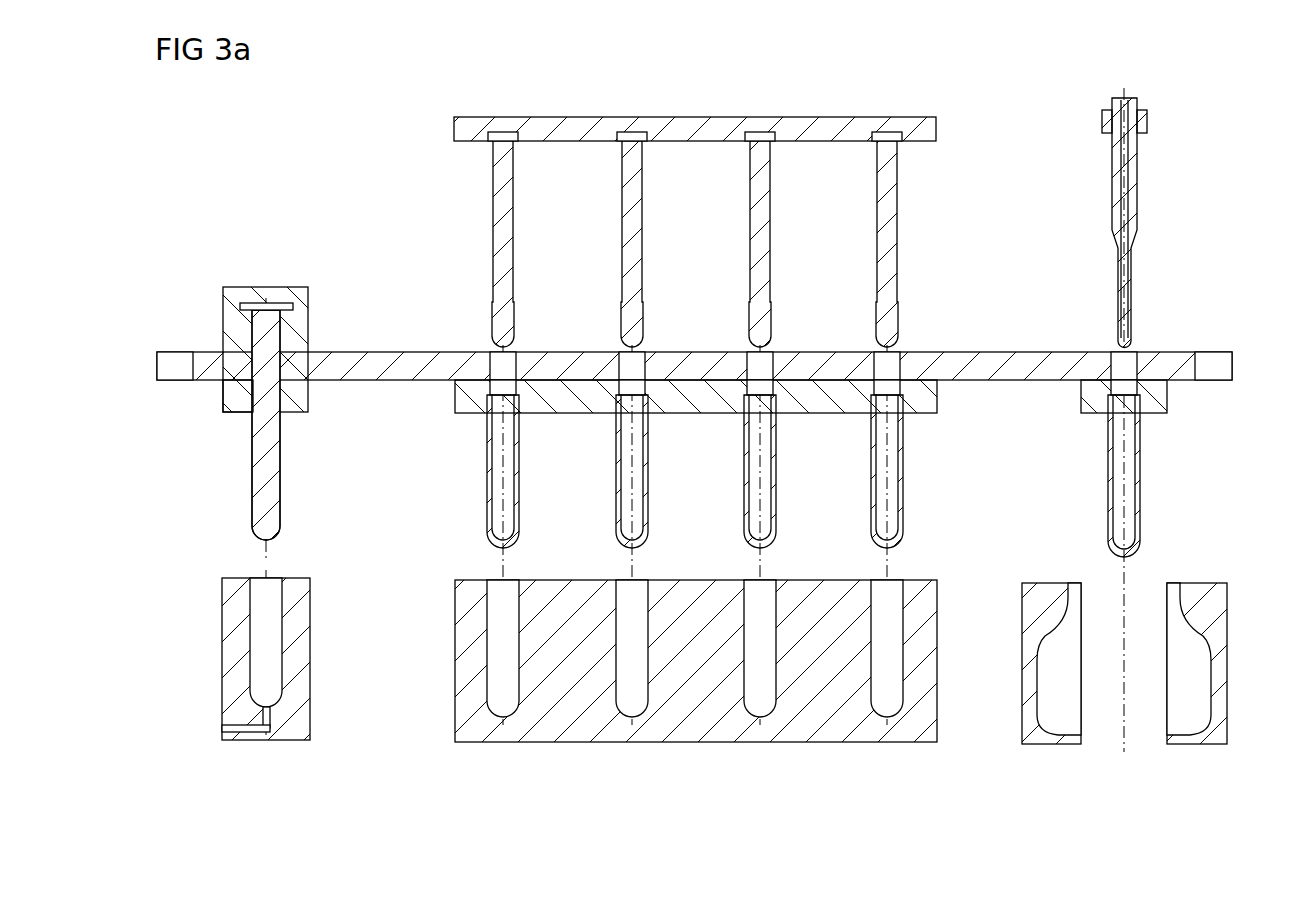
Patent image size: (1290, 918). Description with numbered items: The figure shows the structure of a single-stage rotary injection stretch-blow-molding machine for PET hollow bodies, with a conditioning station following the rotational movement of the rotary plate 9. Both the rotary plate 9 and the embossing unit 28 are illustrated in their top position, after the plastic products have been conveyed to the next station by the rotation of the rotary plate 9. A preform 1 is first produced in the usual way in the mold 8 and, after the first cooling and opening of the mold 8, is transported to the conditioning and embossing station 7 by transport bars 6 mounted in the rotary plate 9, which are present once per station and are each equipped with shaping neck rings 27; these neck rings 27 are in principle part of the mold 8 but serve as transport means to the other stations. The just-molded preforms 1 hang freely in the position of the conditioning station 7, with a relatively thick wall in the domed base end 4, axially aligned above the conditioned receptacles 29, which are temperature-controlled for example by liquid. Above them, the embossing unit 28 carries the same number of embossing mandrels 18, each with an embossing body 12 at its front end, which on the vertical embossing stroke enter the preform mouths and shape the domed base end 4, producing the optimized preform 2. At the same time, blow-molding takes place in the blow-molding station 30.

The preform 1 is at (892, 515).
The preform 2 is at (1128, 506).
The domed base end 4 is at (491, 528).
The transport bars 6 is at (1097, 400).
The conditioning and embossing station 7 is at (912, 713).
The mold 8 is at (240, 392).
The rotary plate 9 is at (402, 366).
The embossing body 12 is at (631, 322).
The embossing mandrels 18 is at (757, 214).
The neck rings 27 is at (230, 404).
The embossing unit 28 is at (927, 131).
The conditioning receptacles 29 is at (478, 718).
The blow-molding station 30 is at (1071, 722).